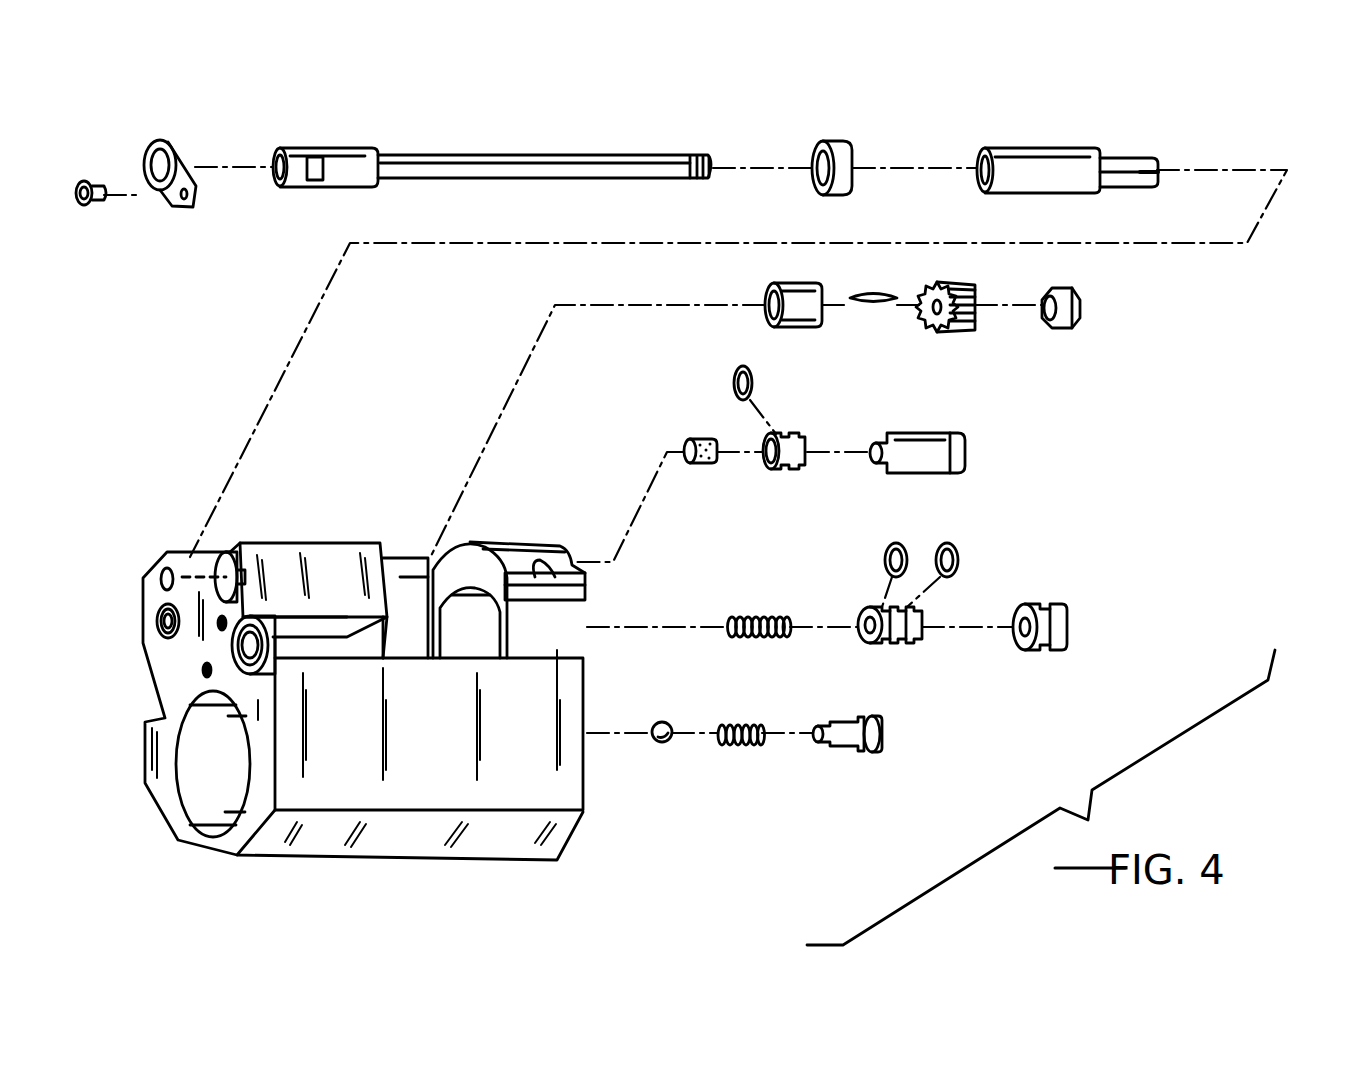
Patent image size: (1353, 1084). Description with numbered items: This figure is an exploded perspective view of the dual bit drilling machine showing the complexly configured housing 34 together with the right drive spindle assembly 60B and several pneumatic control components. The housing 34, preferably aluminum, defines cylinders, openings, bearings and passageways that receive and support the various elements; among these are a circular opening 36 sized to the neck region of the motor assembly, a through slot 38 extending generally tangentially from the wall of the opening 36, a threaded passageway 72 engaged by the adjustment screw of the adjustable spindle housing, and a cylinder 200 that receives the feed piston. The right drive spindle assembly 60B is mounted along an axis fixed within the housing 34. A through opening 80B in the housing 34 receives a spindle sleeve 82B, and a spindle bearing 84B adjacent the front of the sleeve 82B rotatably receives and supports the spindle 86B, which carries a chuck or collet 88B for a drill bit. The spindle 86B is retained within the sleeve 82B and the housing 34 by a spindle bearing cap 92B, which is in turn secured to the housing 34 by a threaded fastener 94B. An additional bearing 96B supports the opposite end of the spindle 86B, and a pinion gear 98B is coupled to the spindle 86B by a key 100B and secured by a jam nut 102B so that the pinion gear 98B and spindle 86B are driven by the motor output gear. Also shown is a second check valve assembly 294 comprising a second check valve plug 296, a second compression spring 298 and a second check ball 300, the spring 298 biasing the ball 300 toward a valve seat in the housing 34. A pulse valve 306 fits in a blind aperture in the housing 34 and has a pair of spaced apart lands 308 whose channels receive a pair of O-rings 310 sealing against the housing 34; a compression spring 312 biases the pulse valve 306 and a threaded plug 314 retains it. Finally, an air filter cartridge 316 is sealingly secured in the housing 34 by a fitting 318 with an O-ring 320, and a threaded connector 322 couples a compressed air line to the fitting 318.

The housing 34 is at (450, 752).
The circular opening 36 is at (483, 652).
The through slot 38 is at (598, 600).
The right spindle assembly 60B is at (1210, 134).
The passageway 72 is at (243, 641).
The through opening 80B is at (223, 543).
The spindle sleeve 82B is at (1032, 150).
The spindle bearing 84B is at (842, 142).
The spindle 86B is at (543, 153).
The chuck or collet 88B is at (347, 160).
The spindle bearing cap 92B is at (167, 141).
The threaded fastener 94B is at (84, 205).
The additional bearing 96B is at (773, 283).
The pinion gear 98B is at (978, 325).
The key 100B is at (871, 296).
The jam nut 102B is at (1078, 337).
The cylinder 200 is at (202, 793).
The second check valve assembly 294 is at (818, 833).
The second check valve plug 296 is at (860, 753).
The second compression spring 298 is at (735, 725).
The second check ball 300 is at (660, 743).
The pulse valve 306 is at (887, 645).
The lands 308 is at (913, 608).
The O-rings 310 is at (965, 517).
The compression spring 312 is at (743, 618).
The threaded plug 314 is at (1032, 605).
The air filter cartridge 316 is at (700, 464).
The fitting 318 is at (790, 472).
The O-ring 320 is at (757, 383).
The threaded connector 322 is at (927, 473).